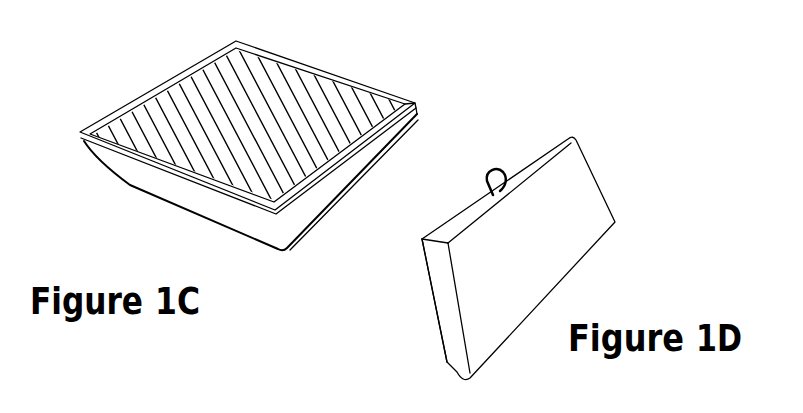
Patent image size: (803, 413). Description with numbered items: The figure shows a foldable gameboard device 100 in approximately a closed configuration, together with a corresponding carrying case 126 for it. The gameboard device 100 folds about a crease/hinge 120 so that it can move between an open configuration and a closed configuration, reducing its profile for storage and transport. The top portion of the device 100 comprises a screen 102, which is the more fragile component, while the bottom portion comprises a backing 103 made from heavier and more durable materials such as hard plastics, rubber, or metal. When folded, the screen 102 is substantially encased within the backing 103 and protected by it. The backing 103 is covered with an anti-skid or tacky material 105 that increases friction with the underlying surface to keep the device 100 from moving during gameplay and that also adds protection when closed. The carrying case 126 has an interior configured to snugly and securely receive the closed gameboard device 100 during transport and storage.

In FIG. 1C, the gameboard device 100 is at (64, 84).
In FIG. 1C, the screen 102 is at (146, 182).
In FIG. 1C, the backing 103 is at (330, 115).
In FIG. 1C, the anti-skid or tacky material 105 is at (270, 140).
In FIG. 1C, the crease/hinge 120 is at (432, 94).
In FIG. 1D, the carrying case 126 is at (593, 231).